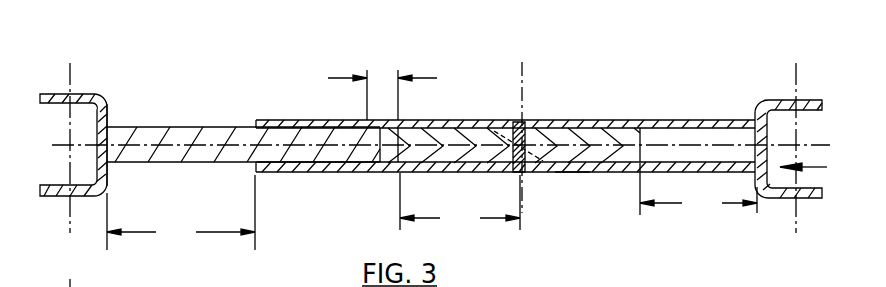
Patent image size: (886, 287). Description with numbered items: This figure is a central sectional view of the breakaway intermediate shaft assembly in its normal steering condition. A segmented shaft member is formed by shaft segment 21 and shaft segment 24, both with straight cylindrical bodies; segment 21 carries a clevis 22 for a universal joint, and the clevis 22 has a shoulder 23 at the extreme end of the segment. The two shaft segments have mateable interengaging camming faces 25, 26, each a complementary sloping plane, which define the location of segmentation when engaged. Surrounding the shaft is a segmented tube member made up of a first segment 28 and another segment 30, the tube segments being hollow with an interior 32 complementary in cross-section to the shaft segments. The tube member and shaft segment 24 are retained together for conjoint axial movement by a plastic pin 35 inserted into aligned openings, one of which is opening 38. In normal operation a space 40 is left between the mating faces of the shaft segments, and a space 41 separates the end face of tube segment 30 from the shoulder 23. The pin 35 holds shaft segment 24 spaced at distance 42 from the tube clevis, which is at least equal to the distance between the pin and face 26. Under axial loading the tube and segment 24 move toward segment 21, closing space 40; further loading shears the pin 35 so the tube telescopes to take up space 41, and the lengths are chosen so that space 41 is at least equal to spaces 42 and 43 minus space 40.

The shaft segment 21 is at (202, 138).
The clevis 22 is at (45, 93).
The shoulder 23 is at (108, 105).
The shaft segment 24 is at (587, 140).
The camming face 25 is at (382, 137).
The camming face 26 is at (398, 128).
The first tube segment 28 is at (572, 173).
The tube segment 30 is at (442, 121).
The interior 32 is at (462, 130).
The plastic pin 35 is at (523, 120).
The opening 38 is at (519, 172).
The space 40 is at (382, 93).
The space 41 is at (181, 212).
The space 42 is at (698, 189).
The space 43 is at (460, 202).